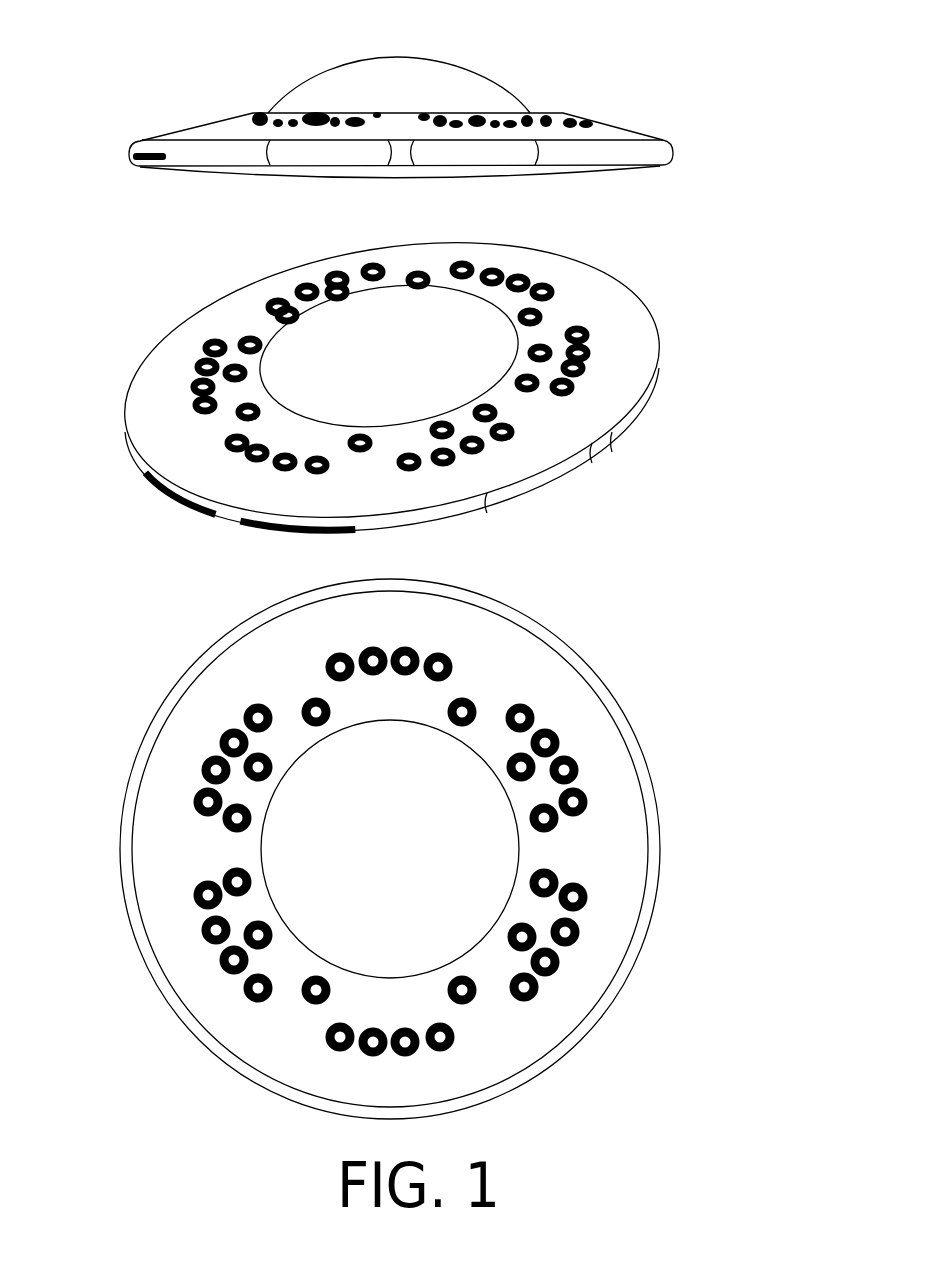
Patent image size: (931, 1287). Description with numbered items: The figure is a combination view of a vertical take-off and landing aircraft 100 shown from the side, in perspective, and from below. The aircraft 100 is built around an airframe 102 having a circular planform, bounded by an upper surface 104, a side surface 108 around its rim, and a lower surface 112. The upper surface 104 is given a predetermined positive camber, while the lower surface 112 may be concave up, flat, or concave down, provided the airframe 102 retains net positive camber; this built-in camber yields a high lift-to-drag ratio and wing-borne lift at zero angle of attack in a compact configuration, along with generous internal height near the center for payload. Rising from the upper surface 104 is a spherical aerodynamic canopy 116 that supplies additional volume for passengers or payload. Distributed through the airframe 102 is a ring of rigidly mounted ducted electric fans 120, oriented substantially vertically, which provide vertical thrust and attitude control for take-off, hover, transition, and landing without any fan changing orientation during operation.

The aircraft 100 is at (825, 97).
The airframe 102 is at (606, 112).
The upper surface 104 is at (171, 131).
The side surface 108 is at (125, 161).
The lower surface 112 is at (631, 176).
The aerodynamic canopy 116 is at (507, 74).
The ducted electric fans 120 is at (505, 434).